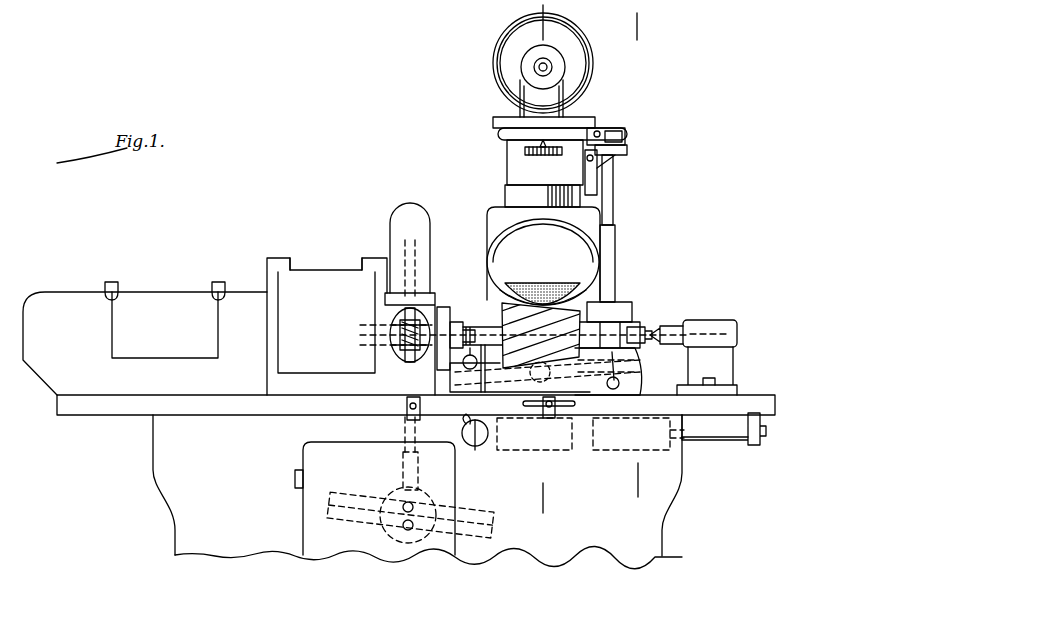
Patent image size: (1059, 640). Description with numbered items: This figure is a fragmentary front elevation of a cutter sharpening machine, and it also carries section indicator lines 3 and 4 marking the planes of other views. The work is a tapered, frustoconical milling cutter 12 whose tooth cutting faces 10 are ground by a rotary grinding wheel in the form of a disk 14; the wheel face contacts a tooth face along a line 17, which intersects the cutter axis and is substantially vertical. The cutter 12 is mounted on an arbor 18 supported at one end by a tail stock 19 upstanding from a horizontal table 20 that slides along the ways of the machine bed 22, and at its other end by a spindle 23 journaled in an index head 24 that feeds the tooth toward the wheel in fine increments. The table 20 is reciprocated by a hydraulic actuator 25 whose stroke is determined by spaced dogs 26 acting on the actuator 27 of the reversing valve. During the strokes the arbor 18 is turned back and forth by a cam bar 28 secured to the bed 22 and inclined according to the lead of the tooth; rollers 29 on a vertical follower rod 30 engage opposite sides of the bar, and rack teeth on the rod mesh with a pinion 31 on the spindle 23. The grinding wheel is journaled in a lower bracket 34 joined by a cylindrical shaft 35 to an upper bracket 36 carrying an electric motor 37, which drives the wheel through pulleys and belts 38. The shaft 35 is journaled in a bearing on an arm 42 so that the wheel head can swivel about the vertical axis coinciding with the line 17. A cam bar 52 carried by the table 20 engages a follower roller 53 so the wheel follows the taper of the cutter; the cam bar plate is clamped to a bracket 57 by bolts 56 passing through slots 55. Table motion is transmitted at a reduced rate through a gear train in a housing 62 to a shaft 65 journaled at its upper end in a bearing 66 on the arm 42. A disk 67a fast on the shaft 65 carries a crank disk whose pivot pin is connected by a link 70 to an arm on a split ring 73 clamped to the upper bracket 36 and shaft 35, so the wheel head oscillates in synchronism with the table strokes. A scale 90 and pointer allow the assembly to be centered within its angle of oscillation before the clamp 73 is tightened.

The section line 3- 3 is at (640, 27).
The section line 4- 4 is at (546, 30).
The cutting face 10 is at (503, 327).
The milling cutter 12 is at (600, 320).
The disk 14 is at (574, 324).
The line 17 is at (543, 300).
The arbor 18 is at (476, 330).
The tail stock 19 is at (718, 323).
The table 20 is at (720, 405).
The machine bed 22 is at (168, 462).
The spindle 23 is at (400, 330).
The index head 24 is at (332, 272).
The hydraulic actuator 25 is at (594, 456).
The dogs 26 is at (420, 412).
The actuator 27 is at (475, 447).
The cam bar 28 is at (343, 495).
The rollers 29 is at (393, 497).
The follower rod 30 is at (403, 455).
The pinion 31 is at (440, 345).
The bracket 34 is at (495, 218).
The shaft 35 is at (515, 190).
The upper bracket 36 is at (505, 122).
The electric motor 37 is at (508, 62).
The pulleys and belts 38 is at (520, 88).
The arm 42 is at (515, 163).
The cam bar 52 is at (632, 370).
The follower roller 53 is at (538, 382).
The slots 55 is at (612, 358).
The bolts 56 is at (620, 383).
The bracket 57 is at (645, 336).
The housing 62 is at (626, 303).
The shaft 65 is at (612, 185).
The bearing 66 is at (612, 170).
The disk 67a is at (625, 150).
The link 70 is at (622, 130).
The split ring 73 is at (500, 136).
The scale 90 is at (541, 150).